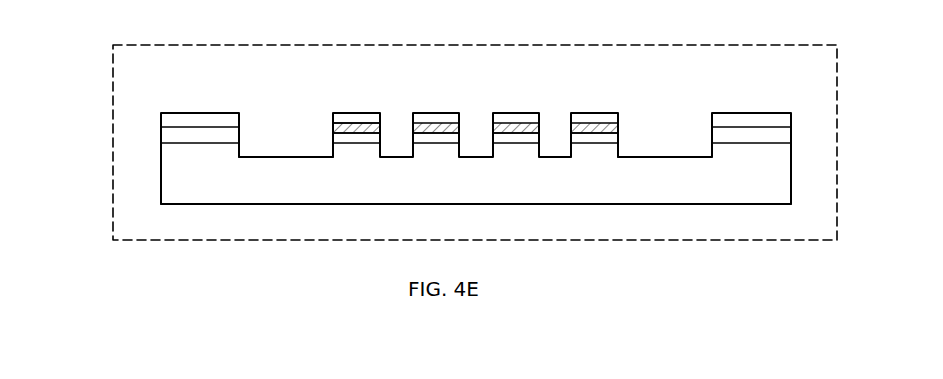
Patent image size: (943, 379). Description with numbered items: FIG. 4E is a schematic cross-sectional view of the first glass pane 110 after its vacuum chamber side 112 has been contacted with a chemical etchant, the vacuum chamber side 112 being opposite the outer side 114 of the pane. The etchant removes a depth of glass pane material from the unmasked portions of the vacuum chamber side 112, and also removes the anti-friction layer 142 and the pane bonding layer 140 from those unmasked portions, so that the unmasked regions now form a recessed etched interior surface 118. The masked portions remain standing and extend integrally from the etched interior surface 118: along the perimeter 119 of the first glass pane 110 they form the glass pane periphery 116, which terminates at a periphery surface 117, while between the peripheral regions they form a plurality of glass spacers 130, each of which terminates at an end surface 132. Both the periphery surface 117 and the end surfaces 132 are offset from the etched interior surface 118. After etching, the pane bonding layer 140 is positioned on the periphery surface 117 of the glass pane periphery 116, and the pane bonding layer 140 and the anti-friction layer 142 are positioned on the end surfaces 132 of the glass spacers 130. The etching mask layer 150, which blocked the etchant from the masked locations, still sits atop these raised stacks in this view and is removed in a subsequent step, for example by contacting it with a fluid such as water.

The first glass pane 110 is at (757, 67).
The vacuum chamber side 112 is at (259, 153).
The outer side 114 is at (241, 205).
The glass pane periphery 116 is at (172, 152).
The periphery surface 117 is at (207, 141).
The etched interior surface 118 is at (283, 157).
The perimeter 119 is at (161, 176).
The glass spacers 130 is at (592, 148).
The end surface 132 is at (582, 137).
The pane bonding layer 140 is at (172, 135).
The anti-friction layer 142 is at (354, 127).
The etching mask layer 150 is at (200, 113).